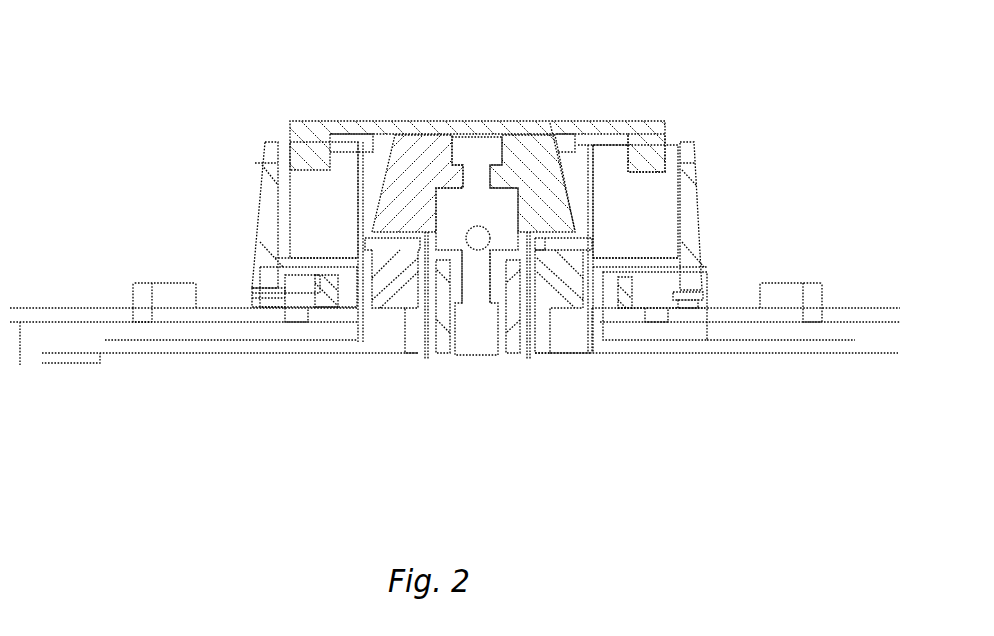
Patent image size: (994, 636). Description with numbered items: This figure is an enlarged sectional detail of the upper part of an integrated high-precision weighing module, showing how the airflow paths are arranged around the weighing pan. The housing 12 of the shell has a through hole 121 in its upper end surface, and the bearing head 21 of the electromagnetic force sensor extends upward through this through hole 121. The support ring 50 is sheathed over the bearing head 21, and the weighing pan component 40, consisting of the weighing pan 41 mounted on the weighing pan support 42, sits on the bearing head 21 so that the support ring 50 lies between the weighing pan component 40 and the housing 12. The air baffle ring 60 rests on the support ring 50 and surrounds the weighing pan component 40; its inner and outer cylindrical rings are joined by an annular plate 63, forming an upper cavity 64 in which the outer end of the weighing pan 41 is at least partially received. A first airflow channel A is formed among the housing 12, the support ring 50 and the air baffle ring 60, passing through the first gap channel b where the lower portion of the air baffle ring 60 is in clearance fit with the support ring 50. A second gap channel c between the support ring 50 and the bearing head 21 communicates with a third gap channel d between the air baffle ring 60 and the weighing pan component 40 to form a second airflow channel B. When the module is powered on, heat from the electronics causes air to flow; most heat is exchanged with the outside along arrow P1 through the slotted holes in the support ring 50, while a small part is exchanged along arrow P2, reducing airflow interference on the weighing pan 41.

The housing 12 is at (830, 318).
The bearing head 21 is at (512, 270).
The weighing pan component 40 is at (643, 103).
The weighing pan 41 is at (650, 136).
The weighing pan support 42 is at (410, 172).
The support ring 50 is at (628, 304).
The air baffle ring 60 is at (265, 207).
The annular plate 63 is at (642, 185).
The upper cavity 64 is at (303, 285).
The through hole 121 is at (574, 326).
The first airflow channel A is at (608, 297).
The second airflow channel B is at (397, 240).
The first gap channel b is at (683, 263).
The second gap channel c is at (522, 317).
The third gap channel d is at (578, 192).
The arrow P1 is at (253, 290).
The arrow P2 is at (367, 226).